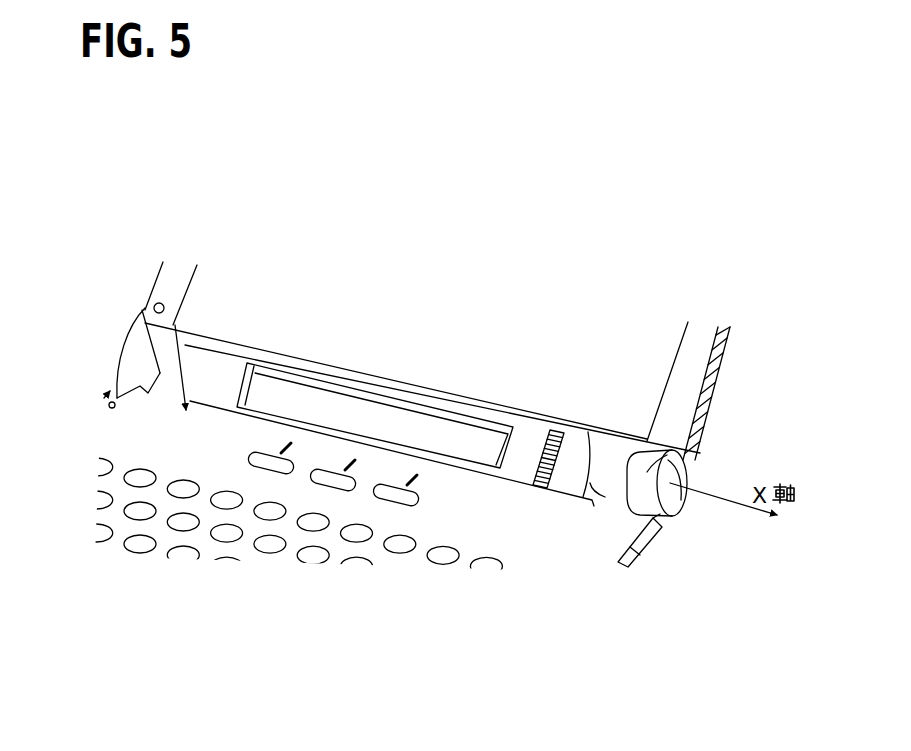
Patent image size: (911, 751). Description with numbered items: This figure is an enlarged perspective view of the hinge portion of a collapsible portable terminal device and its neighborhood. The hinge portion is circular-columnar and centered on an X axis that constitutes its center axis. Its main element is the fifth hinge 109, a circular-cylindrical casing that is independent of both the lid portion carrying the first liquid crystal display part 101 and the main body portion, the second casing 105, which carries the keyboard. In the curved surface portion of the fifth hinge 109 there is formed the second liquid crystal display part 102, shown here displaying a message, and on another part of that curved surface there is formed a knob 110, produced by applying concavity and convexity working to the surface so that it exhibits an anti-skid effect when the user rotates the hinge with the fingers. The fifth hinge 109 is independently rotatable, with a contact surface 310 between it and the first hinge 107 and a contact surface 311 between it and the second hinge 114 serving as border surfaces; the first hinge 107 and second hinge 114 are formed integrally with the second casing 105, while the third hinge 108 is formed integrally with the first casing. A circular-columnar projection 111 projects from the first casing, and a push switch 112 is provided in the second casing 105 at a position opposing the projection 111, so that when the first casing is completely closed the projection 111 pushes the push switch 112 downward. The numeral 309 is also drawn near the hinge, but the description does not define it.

The first liquid crystal display part 101 is at (523, 323).
The second liquid crystal display part 102 is at (267, 386).
The second casing 105 is at (590, 543).
The first hinge 107 is at (605, 495).
The third hinge 108 is at (660, 457).
The fifth hinge 109 is at (517, 460).
The knob 110 is at (567, 433).
The projection 111 is at (155, 303).
The push switch 112 is at (109, 407).
The second hinge 114 is at (160, 373).
The hinge post 309 is at (207, 340).
The contact surface 310 is at (583, 497).
The contact surface 311 is at (177, 380).